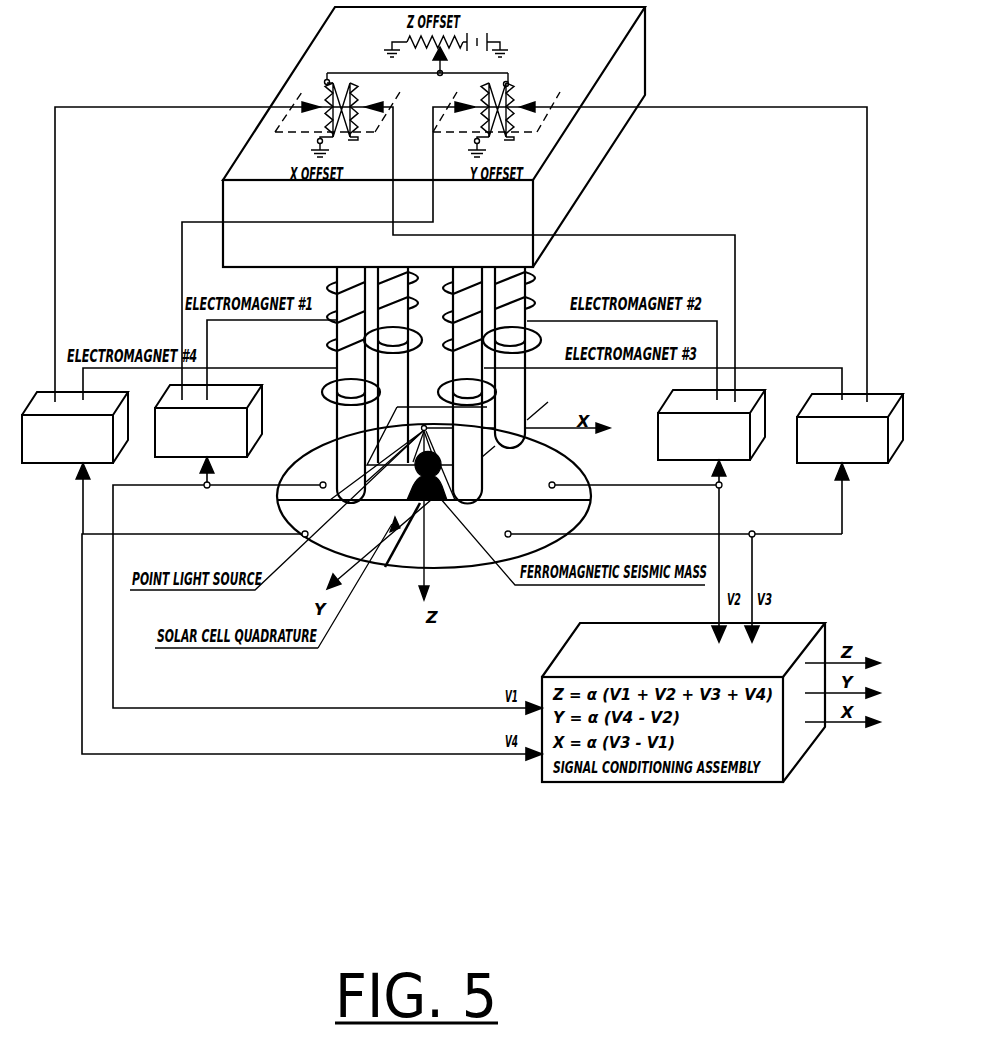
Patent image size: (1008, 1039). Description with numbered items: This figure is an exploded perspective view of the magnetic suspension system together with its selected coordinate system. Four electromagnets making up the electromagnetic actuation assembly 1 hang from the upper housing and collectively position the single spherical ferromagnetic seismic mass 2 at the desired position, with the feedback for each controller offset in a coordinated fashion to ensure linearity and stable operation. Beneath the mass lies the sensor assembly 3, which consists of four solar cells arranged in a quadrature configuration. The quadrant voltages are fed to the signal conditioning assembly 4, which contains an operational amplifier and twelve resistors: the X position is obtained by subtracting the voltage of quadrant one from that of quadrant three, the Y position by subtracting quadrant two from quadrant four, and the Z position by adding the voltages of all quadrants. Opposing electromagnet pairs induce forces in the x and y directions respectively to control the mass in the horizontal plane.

The electromagnetic actuation assembly 1 is at (209, 435).
The single spherical ferromagnetic seismic mass 2 is at (711, 437).
The sensor assembly 3 is at (850, 464).
The signal conditioning assembly 4 is at (75, 463).